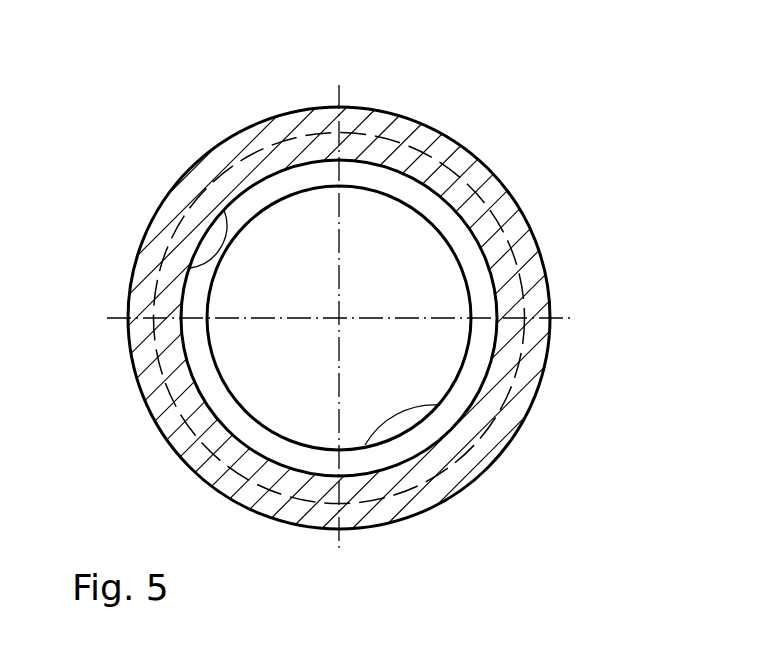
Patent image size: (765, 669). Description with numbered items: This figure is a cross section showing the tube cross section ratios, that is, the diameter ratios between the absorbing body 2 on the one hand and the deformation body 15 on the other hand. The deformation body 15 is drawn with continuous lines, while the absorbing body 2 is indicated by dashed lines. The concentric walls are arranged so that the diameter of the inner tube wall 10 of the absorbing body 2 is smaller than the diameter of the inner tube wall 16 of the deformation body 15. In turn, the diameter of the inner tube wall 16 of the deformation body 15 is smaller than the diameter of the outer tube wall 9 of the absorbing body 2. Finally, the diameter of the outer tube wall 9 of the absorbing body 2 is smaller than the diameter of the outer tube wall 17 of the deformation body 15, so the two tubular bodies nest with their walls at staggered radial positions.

The absorbing body 2 is at (535, 288).
The outer tube wall of the absorbing body 9 is at (335, 133).
The inner tube wall of the absorbing body 10 is at (412, 410).
The deformation body 15 is at (382, 270).
The inner tube wall of the deformation body 16 is at (223, 211).
The outer tube wall of the deformation body 17 is at (287, 112).